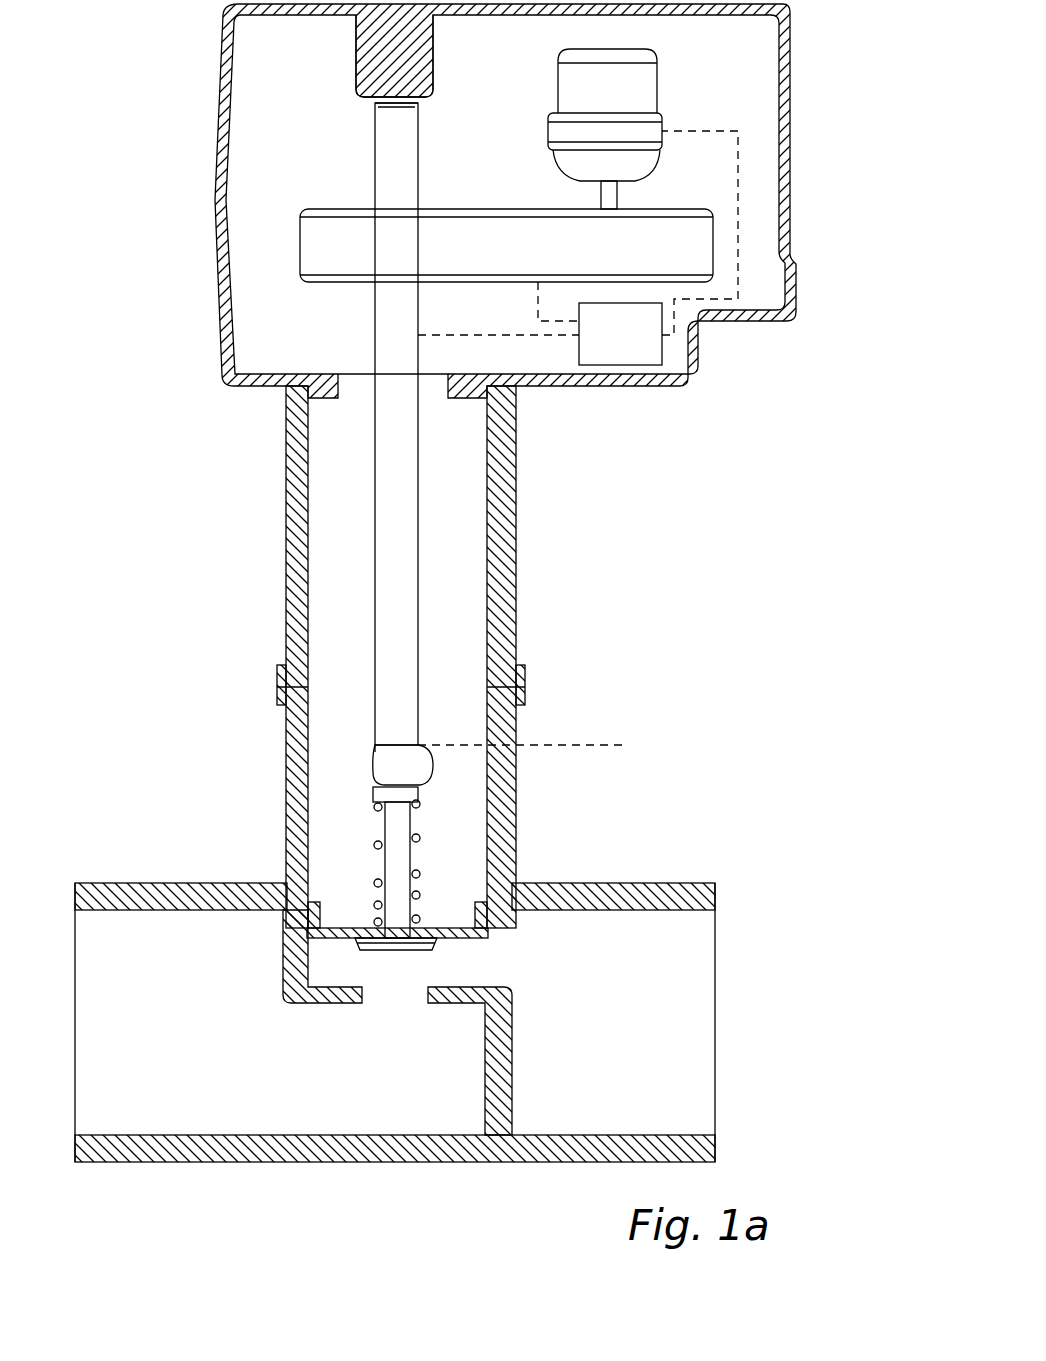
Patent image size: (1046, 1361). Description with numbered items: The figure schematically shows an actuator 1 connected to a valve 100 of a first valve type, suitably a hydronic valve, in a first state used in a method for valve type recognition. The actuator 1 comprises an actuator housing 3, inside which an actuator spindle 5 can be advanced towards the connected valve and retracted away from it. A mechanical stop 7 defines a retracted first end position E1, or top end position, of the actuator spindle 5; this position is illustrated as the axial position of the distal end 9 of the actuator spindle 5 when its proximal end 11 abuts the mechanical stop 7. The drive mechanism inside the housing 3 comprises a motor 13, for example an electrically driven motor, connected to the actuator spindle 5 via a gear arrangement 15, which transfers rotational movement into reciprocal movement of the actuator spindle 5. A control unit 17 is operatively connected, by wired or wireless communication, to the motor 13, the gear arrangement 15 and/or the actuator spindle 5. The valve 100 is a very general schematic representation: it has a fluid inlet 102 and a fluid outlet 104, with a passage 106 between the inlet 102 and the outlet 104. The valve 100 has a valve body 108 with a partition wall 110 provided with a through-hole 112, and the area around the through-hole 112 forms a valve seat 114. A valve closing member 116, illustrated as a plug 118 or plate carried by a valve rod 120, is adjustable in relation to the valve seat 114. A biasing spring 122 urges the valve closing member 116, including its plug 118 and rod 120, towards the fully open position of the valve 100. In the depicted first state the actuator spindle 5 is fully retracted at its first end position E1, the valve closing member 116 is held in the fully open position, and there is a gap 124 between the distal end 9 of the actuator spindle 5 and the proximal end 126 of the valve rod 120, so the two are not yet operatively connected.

The actuator 1 is at (165, 66).
The actuator housing 3 is at (287, 400).
The actuator spindle 5 is at (385, 537).
The mechanical stop 7 is at (383, 100).
The distal end 9 is at (378, 748).
The proximal end 11 is at (378, 107).
The motor 13 is at (657, 90).
The gear arrangement 15 is at (688, 249).
The control unit 17 is at (617, 350).
The first end position E1 is at (541, 746).
The valve 100 is at (134, 828).
The fluid inlet 102 is at (76, 1080).
The fluid outlet 104 is at (715, 1078).
The passage 106 is at (247, 1108).
The valve body 108 is at (653, 883).
The partition wall 110 is at (448, 1000).
The through-hole 112 is at (388, 997).
The valve seat 114 is at (430, 1000).
The valve closing member 116 is at (355, 863).
The plug 118 is at (362, 958).
The valve rod 120 is at (392, 870).
The biasing spring 122 is at (416, 895).
The gap 124 is at (433, 760).
The proximal end 126 is at (372, 783).